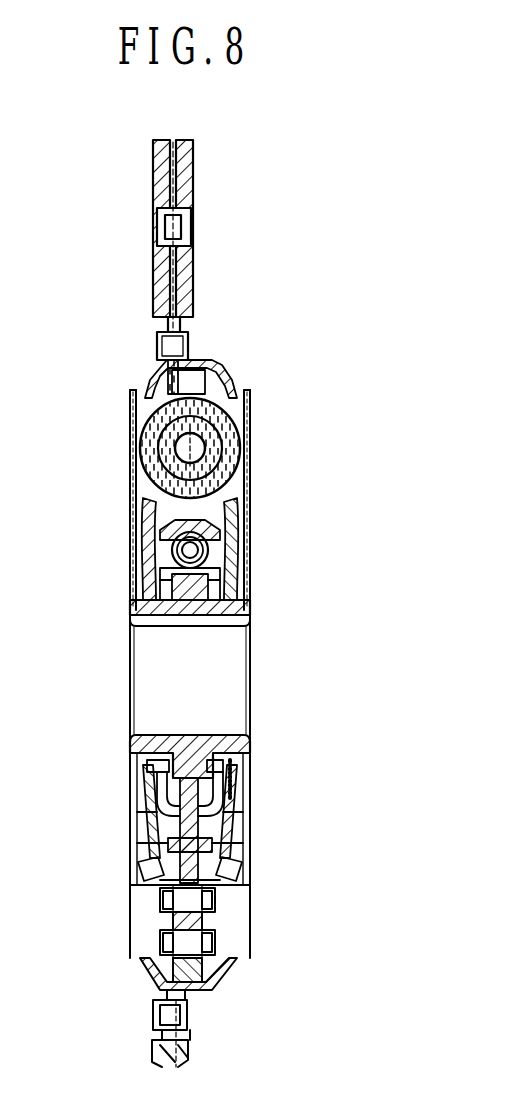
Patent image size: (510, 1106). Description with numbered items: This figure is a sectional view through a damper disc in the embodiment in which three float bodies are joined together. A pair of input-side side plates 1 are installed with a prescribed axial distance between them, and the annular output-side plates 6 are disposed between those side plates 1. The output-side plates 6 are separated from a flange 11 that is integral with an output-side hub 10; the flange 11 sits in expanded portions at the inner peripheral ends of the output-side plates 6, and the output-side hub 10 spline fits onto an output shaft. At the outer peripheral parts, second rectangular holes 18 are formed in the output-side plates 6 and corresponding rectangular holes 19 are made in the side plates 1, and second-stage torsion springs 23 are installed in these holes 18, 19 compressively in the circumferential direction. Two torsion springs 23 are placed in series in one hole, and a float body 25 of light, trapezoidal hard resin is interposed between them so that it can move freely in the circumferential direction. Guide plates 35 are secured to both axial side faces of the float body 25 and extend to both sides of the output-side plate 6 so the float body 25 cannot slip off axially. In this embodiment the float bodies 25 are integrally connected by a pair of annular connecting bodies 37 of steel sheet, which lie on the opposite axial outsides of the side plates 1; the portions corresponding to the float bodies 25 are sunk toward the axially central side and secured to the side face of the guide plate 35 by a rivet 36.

The input-side side plate 1 is at (136, 531).
The output-side plate 6 is at (185, 836).
The output-side hub 10 is at (143, 627).
The flange 11 is at (193, 627).
The second rectangular hole 18 is at (152, 384).
The rectangular hole 19 is at (145, 443).
The second-stage torsion spring 23 is at (240, 447).
The float body 25 is at (135, 877).
The guide plate 35 is at (165, 910).
The rivet 36 is at (150, 960).
The annular connecting body 37 is at (128, 418).